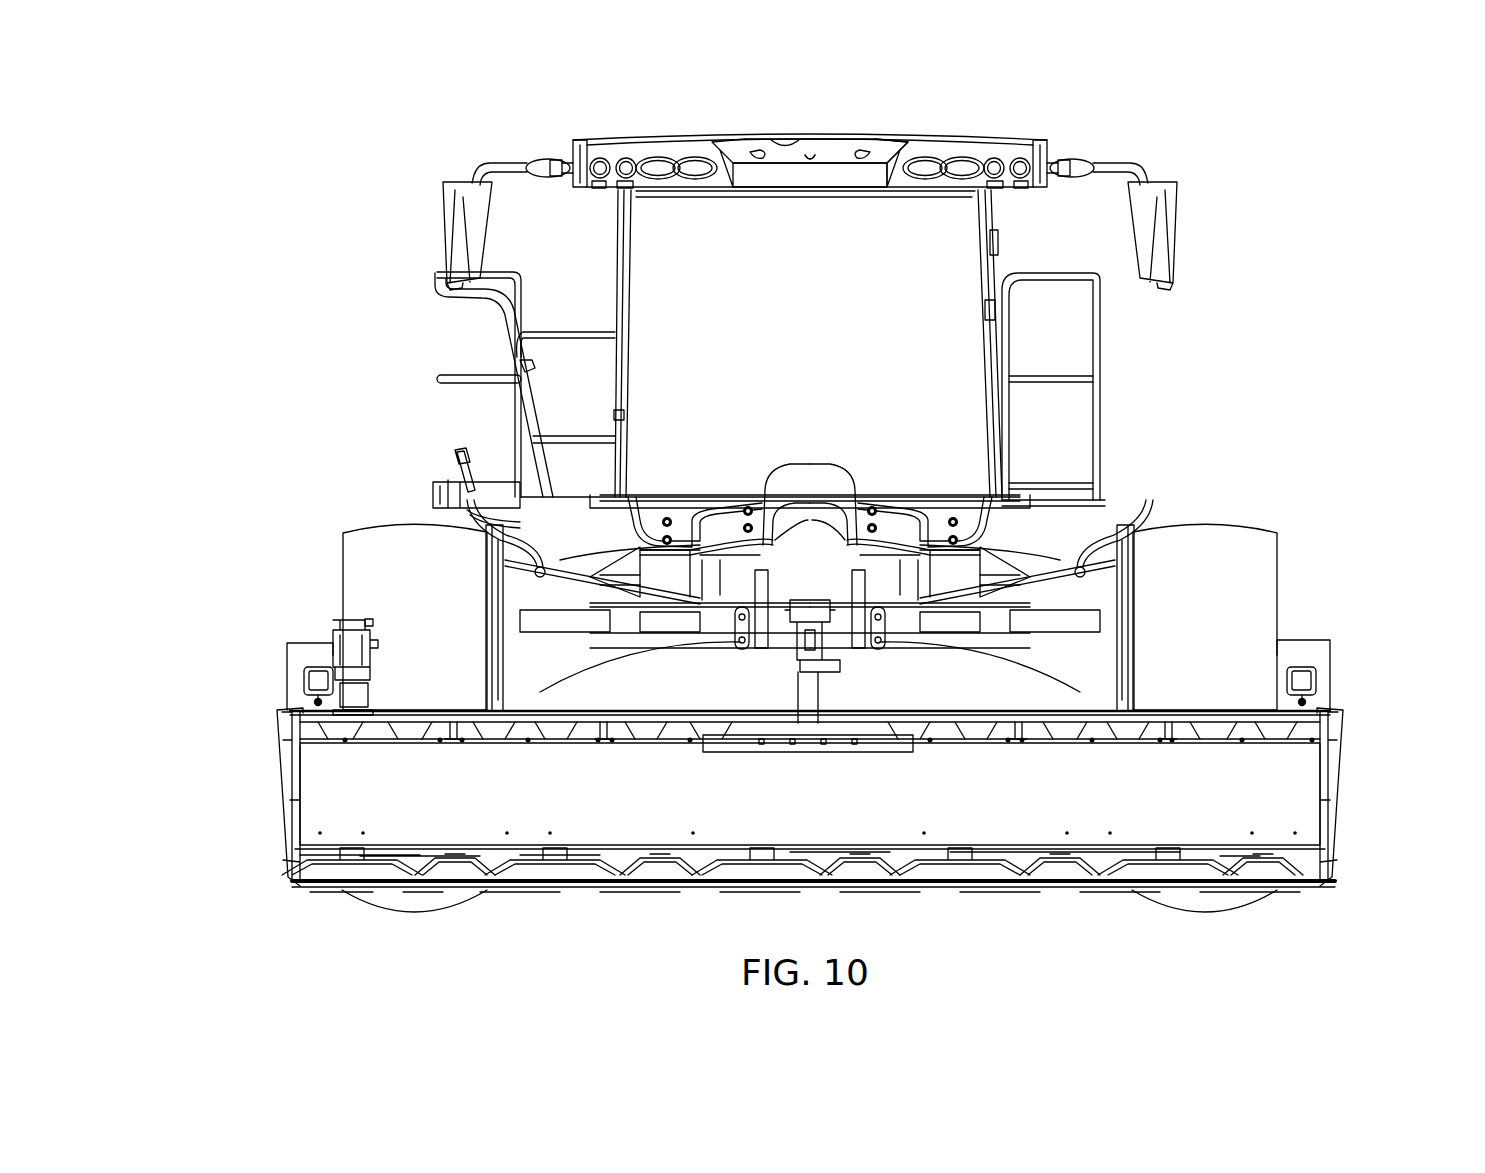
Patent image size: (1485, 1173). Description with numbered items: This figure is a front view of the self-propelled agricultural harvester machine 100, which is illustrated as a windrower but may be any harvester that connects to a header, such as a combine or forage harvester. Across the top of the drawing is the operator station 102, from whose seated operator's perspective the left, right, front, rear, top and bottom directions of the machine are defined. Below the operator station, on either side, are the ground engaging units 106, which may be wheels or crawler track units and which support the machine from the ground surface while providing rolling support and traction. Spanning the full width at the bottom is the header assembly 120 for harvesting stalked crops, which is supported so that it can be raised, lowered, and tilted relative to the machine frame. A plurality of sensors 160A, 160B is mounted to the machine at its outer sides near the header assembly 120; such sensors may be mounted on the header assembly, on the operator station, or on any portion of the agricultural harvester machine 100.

The agricultural harvester machine 100 is at (408, 104).
The operator station 102 is at (793, 134).
The ground engaging units 106 is at (1250, 448).
The header assembly 120 is at (292, 783).
The sensor 160A is at (305, 678).
The sensor 160B is at (1305, 678).